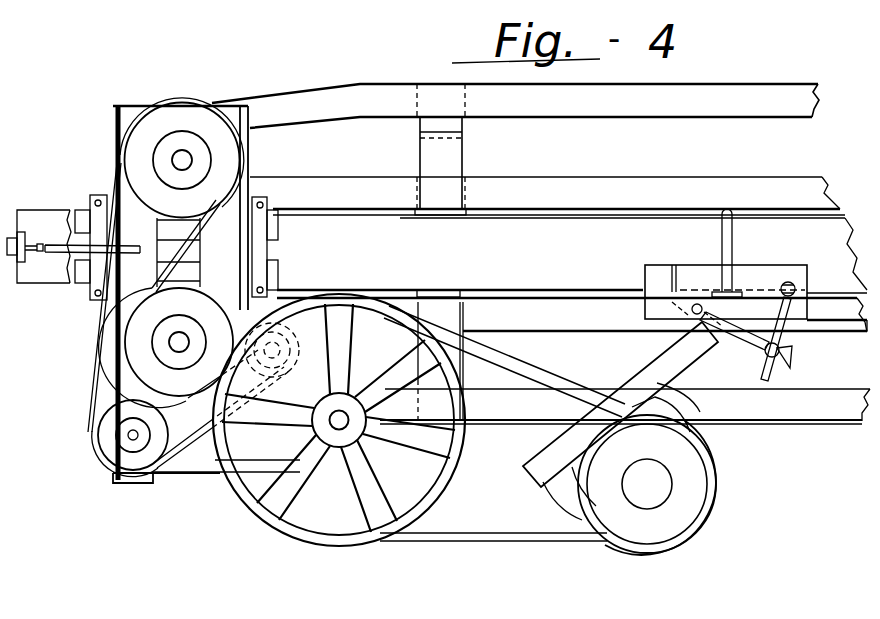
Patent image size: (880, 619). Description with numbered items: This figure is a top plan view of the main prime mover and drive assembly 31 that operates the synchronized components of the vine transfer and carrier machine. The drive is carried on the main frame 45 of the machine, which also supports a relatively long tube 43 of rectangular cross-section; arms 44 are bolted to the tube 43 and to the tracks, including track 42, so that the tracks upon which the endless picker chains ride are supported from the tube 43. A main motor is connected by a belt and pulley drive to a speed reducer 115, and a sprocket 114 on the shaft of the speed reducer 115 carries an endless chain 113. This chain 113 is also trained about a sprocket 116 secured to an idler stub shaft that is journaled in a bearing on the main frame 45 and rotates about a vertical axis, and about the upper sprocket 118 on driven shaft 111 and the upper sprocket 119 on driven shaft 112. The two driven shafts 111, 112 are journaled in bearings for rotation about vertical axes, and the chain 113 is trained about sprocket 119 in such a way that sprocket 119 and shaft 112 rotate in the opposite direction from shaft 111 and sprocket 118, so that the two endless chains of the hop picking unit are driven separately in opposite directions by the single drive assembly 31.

The main drive assembly 31 is at (262, 532).
The track 42 is at (531, 397).
The tube 43 is at (366, 75).
The arms 44 is at (469, 160).
The main frame 45 is at (127, 110).
The driven shaft 111 is at (184, 159).
The driven shaft 112 is at (170, 341).
The chain 113 is at (207, 218).
The sprocket 114 is at (299, 316).
The speed reducer 115 is at (344, 326).
The sprocket 116 is at (108, 440).
The upper sprocket 118 is at (224, 156).
The upper sprocket 119 is at (138, 358).